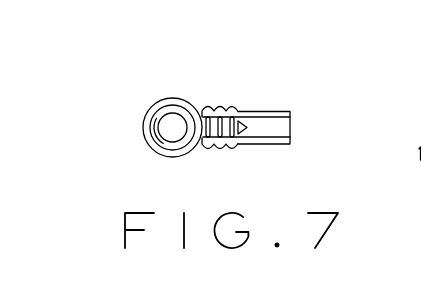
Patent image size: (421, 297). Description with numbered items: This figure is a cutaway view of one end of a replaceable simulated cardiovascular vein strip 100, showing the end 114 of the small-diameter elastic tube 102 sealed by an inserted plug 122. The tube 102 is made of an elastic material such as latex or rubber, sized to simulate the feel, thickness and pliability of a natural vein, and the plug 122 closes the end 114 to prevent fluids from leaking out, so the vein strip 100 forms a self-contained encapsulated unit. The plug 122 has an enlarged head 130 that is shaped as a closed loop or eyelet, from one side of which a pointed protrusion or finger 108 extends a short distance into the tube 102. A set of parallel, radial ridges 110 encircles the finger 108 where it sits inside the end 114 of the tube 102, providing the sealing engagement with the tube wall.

The simulated cardiovascular vein strip 100 is at (225, 77).
The elastic tube 102 is at (277, 112).
The finger 108 is at (241, 118).
The radial ridges 110 is at (221, 146).
The end 114 is at (200, 104).
The plug 122 is at (130, 114).
The head 130 is at (156, 148).